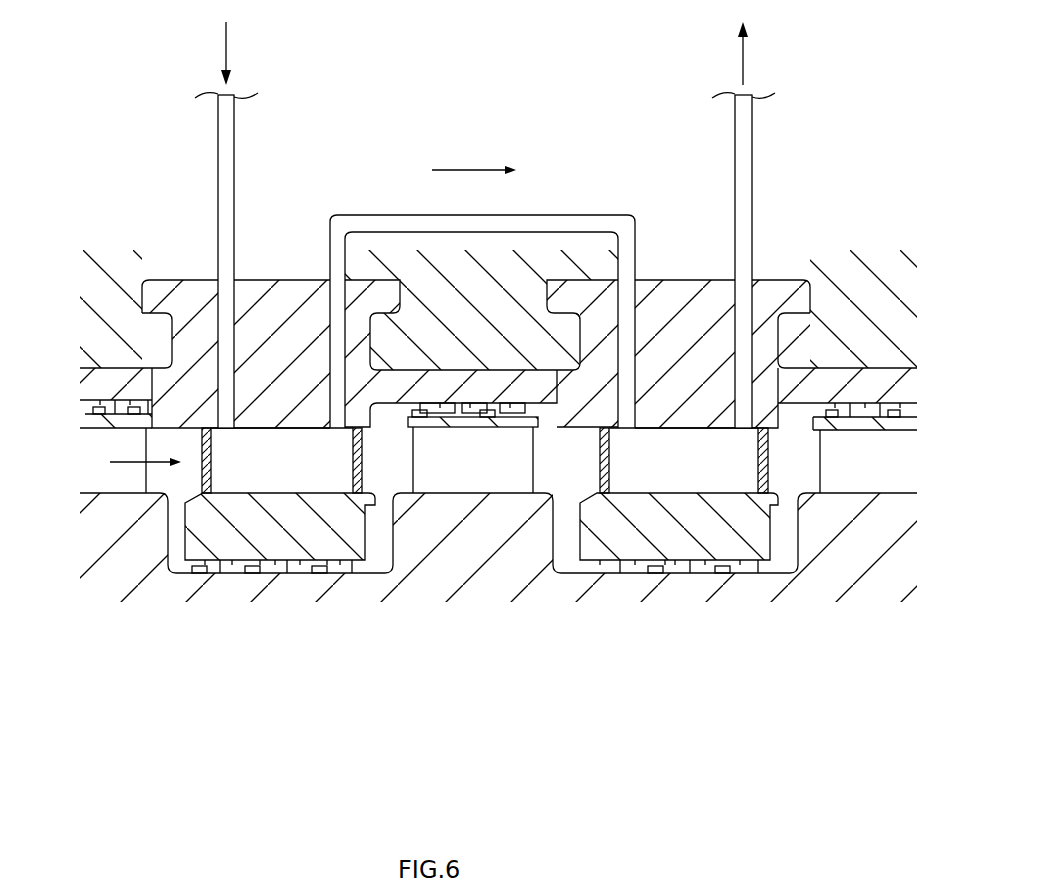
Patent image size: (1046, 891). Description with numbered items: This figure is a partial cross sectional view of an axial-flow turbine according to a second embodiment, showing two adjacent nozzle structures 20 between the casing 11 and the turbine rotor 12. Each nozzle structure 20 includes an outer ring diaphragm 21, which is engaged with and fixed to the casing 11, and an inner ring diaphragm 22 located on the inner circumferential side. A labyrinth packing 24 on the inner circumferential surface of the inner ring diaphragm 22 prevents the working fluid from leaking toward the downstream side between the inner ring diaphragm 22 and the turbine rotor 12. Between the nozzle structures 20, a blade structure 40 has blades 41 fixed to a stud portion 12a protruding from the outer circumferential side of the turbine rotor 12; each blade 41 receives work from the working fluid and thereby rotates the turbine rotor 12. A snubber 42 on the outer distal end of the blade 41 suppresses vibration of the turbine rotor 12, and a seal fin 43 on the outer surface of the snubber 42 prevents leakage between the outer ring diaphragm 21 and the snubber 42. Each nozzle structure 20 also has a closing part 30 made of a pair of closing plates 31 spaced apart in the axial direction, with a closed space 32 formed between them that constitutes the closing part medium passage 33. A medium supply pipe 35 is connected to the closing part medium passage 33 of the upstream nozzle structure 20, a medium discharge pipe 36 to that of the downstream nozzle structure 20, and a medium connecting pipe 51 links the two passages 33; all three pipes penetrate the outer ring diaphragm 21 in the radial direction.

The casing 11 is at (489, 265).
The turbine rotor 12 is at (498, 583).
The stud portion 12a is at (490, 528).
The nozzle structure 20 is at (136, 270).
The outer ring diaphragm 21 is at (285, 300).
The inner ring diaphragm 22 is at (200, 537).
The labyrinth packing 24 is at (270, 567).
The closing part 30 is at (205, 409).
The closing plate 31 is at (350, 458).
The closed space 32 is at (484, 551).
The closing part medium passage 33 is at (310, 470).
The medium supply pipe 35 is at (218, 157).
The medium discharge pipe 36 is at (752, 157).
The blade structure 40 is at (474, 360).
The blade 41 is at (448, 463).
The snubber 42 is at (510, 415).
The seal fin 43 is at (447, 405).
The medium connecting pipe 51 is at (542, 225).